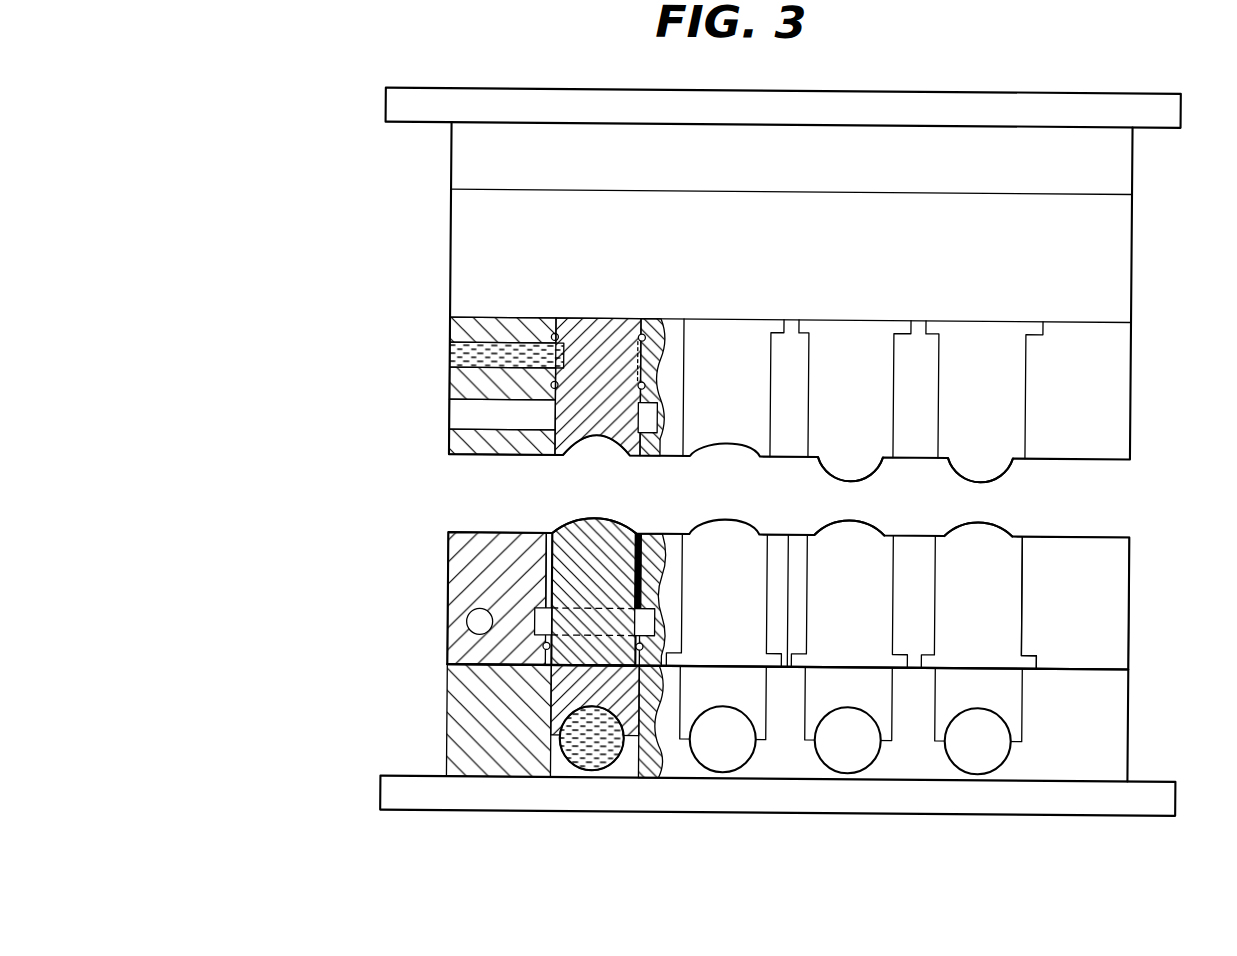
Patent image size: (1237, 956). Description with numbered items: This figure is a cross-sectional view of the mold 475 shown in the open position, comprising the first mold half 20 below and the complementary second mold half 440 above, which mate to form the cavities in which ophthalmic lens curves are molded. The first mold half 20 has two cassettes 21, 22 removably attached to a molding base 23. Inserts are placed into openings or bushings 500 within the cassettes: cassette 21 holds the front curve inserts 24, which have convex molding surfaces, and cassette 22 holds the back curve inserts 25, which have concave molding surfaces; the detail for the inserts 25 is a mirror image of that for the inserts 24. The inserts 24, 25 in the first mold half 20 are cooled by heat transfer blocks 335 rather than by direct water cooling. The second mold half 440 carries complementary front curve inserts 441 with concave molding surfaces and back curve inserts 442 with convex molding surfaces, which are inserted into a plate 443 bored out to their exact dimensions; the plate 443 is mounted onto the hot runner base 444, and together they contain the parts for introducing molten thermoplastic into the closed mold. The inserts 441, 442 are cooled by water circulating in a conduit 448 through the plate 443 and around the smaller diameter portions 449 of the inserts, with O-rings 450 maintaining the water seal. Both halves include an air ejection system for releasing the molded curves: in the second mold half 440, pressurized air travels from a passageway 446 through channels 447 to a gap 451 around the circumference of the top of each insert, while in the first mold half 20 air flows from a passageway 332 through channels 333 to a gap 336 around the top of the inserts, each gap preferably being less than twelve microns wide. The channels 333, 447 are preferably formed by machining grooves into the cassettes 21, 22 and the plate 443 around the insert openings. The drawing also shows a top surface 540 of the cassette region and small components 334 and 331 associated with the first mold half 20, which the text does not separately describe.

The mold 475 is at (248, 74).
The second mold half 440 is at (355, 241).
The hot runner base 444 is at (1150, 110).
The plate 443 is at (1115, 395).
The channels 447 is at (553, 455).
The conduit 448 is at (455, 357).
The passageway 446 is at (452, 430).
The O-rings 450 is at (551, 385).
The front curve inserts 24 is at (592, 518).
The gap 451 is at (557, 460).
The smaller diameter portions 449 is at (643, 362).
The front curve inserts 441 is at (572, 457).
The back curve inserts 442 is at (878, 462).
The first mold half 20 is at (333, 582).
The cassette 22 is at (1100, 540).
The top surface 540 is at (1075, 533).
The openings or bushings 500 is at (1023, 600).
The back curve inserts 25 is at (848, 552).
The cassette 21 is at (451, 533).
The channels 333 is at (545, 580).
The gap 336 is at (555, 531).
The passageway 332 is at (536, 624).
The O-ring 334 is at (541, 647).
The molding base 23 is at (1143, 790).
The heat transfer blocks 335 is at (553, 712).
The ball 331 is at (576, 760).